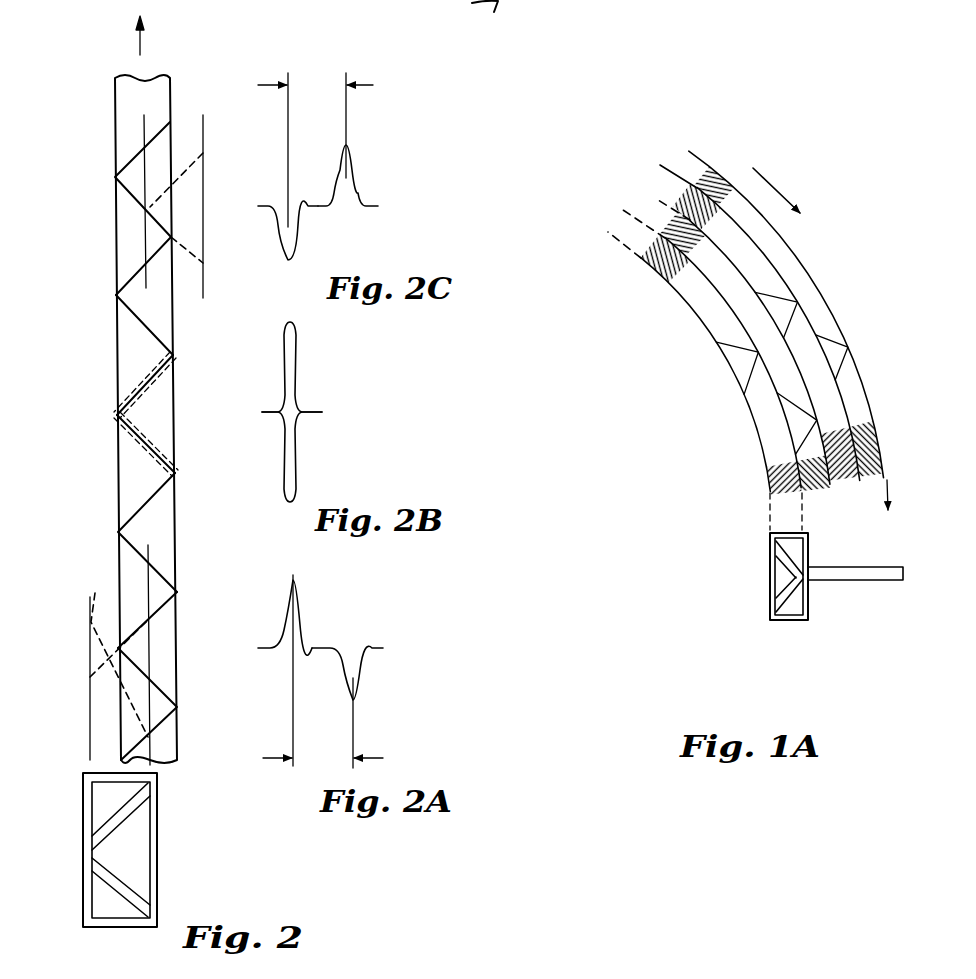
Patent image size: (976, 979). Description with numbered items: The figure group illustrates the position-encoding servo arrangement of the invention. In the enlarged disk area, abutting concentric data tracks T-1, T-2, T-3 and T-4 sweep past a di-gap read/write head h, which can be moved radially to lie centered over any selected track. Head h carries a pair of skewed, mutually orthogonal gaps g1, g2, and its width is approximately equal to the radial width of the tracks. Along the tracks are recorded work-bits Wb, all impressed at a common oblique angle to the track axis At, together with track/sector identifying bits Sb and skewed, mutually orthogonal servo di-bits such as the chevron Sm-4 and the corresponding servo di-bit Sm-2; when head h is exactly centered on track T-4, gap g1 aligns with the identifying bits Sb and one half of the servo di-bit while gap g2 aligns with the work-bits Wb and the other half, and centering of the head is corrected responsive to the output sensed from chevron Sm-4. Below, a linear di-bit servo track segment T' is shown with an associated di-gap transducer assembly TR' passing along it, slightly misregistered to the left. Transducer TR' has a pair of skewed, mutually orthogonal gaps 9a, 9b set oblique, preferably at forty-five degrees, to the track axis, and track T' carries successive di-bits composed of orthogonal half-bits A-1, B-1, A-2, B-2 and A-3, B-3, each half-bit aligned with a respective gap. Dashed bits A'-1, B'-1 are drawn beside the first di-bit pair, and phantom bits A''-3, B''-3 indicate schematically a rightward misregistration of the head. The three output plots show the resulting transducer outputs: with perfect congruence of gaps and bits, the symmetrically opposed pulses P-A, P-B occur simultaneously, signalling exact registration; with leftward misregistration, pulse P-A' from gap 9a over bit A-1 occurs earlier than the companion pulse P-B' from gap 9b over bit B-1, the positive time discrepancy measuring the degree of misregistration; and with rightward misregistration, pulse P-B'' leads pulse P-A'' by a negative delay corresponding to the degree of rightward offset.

In FIG. 2, the di-bit data track T' is at (132, 390).
In FIG. 2, the di-bit half-bit A A-3 is at (127, 277).
In FIG. 2, the di-bit half-bit B B-3 is at (132, 312).
In FIG. 2, the phantom bit A'' A''-3 is at (200, 177).
In FIG. 2, the phantom bit B'' B''-3 is at (210, 250).
In FIG. 2, the di-bit half-bit A A-2 is at (128, 393).
In FIG. 2, the di-bit half-bit B B-2 is at (137, 437).
In FIG. 2, the di-bit half-bit A A-1 is at (142, 618).
In FIG. 2, the di-bit half-bit B B-1 is at (165, 693).
In FIG. 2, the shifted B segment B'-1 is at (87, 653).
In FIG. 2, the shifted A segment A'-1 is at (87, 652).
In FIG. 2, the di-gap transducer assembly TR' is at (122, 850).
In FIG. 2, the transducer gap g_a 9a is at (105, 825).
In FIG. 2, the transducer gap g_b 9b is at (147, 893).
In FIG. 2A, the output pulse P-A' is at (274, 670).
In FIG. 2A, the output pulse P-B' is at (357, 707).
In FIG. 2B, the output pulse P-A is at (283, 365).
In FIG. 2B, the output pulse P-B is at (283, 457).
In FIG. 2C, the output pulse P-A'' is at (360, 139).
In FIG. 2C, the output pulse P-B'' is at (301, 169).
In FIG. 1A, the data track T-1 is at (653, 145).
In FIG. 1A, the data track T-2 is at (640, 168).
In FIG. 1A, the data track T-3 is at (607, 180).
In FIG. 1A, the data track T-4 is at (613, 222).
In FIG. 1A, the servo di-bit chevron Sm-4 is at (738, 373).
In FIG. 1A, the servo di-bit Sm-2 is at (792, 315).
In FIG. 1A, the track/sector identifying bits Sb is at (687, 283).
In FIG. 1A, the work-bits Wb is at (669, 169).
In FIG. 1A, the track axis At is at (893, 512).
In FIG. 1A, the di-gap read/write head h is at (812, 564).
In FIG. 1A, the transducer gap g_1 g1 is at (782, 562).
In FIG. 1A, the transducer gap g_2 g2 is at (762, 606).